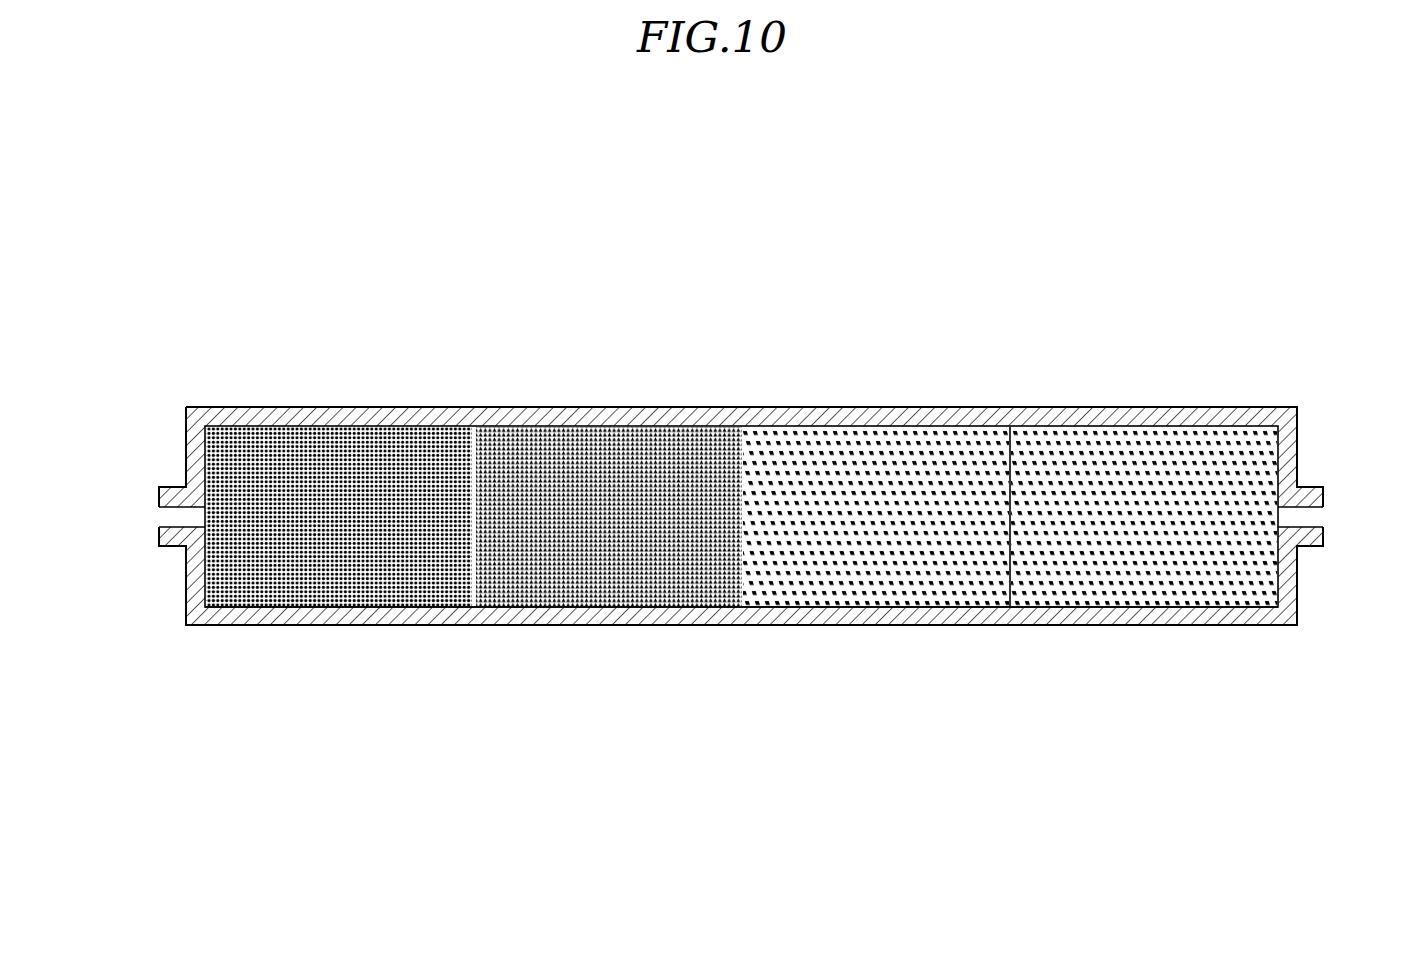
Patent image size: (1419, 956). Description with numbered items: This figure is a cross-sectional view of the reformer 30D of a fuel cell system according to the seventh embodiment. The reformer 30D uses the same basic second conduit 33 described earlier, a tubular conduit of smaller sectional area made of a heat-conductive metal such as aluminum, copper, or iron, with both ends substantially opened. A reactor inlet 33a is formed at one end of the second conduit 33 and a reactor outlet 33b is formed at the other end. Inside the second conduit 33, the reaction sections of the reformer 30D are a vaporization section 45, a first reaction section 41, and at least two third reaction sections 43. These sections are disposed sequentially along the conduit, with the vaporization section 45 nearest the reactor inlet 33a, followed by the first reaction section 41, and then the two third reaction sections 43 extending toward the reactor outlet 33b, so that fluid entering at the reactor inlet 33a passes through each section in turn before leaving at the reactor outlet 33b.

The reformer 30D is at (1220, 353).
The second conduit 33 is at (507, 615).
The reactor inlet 33a is at (158, 517).
The reactor outlet 33b is at (1323, 517).
The first reaction section 41 is at (610, 603).
The third reaction section 43 is at (882, 607).
The vaporization section 45 is at (330, 603).